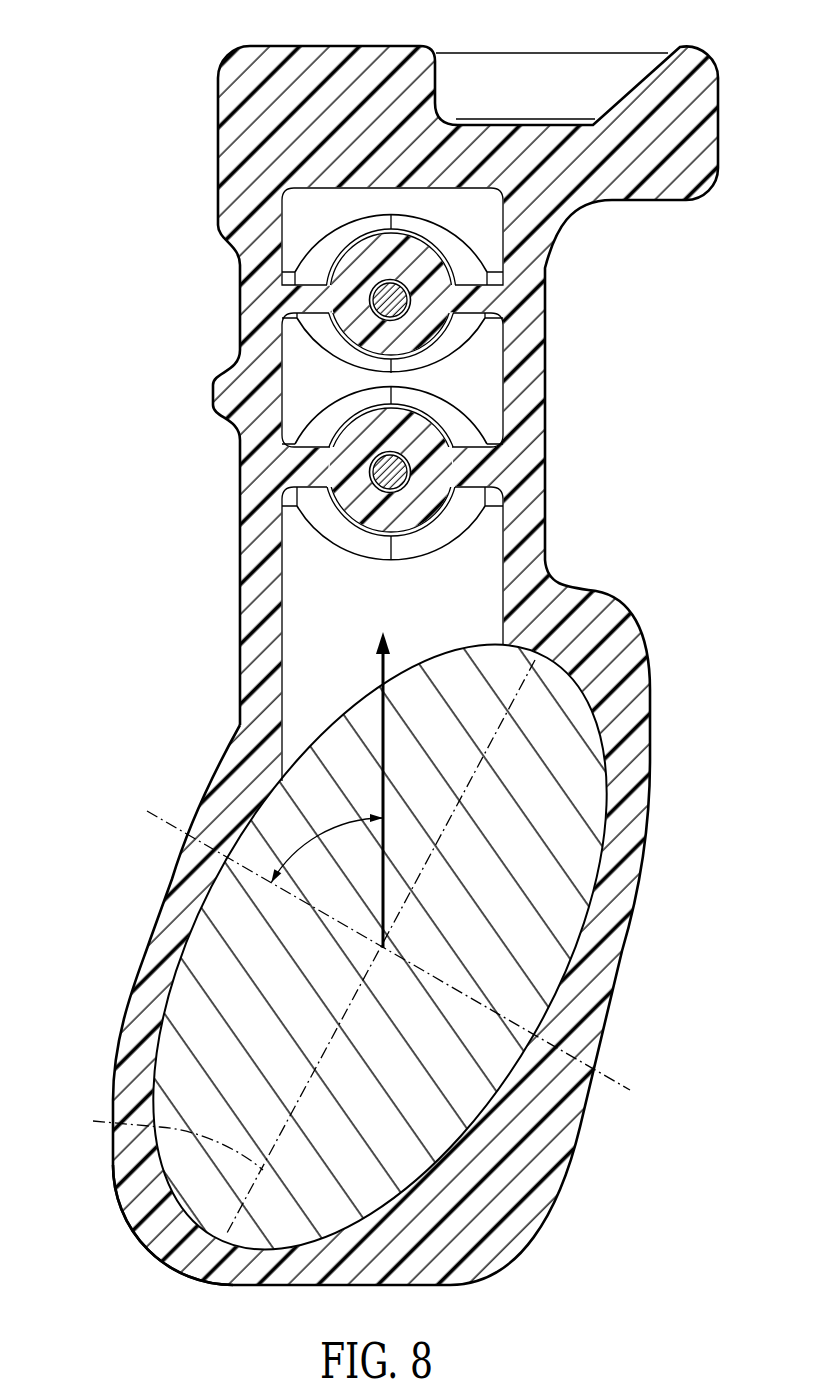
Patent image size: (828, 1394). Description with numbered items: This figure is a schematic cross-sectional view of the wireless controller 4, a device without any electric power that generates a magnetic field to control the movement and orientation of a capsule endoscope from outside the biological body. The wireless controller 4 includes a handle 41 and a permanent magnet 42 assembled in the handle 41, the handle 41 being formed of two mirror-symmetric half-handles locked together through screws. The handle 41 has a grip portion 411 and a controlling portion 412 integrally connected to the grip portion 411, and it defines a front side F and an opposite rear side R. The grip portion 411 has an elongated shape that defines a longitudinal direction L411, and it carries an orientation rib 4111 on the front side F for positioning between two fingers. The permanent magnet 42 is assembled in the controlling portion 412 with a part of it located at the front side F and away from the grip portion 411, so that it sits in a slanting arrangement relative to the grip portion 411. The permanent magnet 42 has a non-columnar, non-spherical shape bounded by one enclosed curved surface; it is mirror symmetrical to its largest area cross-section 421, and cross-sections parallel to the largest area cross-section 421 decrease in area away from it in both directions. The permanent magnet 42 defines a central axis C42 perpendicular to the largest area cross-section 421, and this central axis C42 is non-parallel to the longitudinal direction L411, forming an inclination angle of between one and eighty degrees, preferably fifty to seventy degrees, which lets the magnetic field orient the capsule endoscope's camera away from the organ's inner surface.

The wireless controller 4 is at (177, 42).
The handle 41 is at (262, 775).
The grip portion 411 is at (240, 658).
The orientation rib 4111 is at (233, 398).
The controlling portion 412 is at (257, 1005).
The permanent magnet 42 is at (598, 741).
The largest area cross-section 421 is at (152, 1195).
The longitudinal direction L411 is at (375, 670).
The central axis C42 is at (602, 1075).
The rear side R is at (660, 921).
The front side F is at (93, 996).